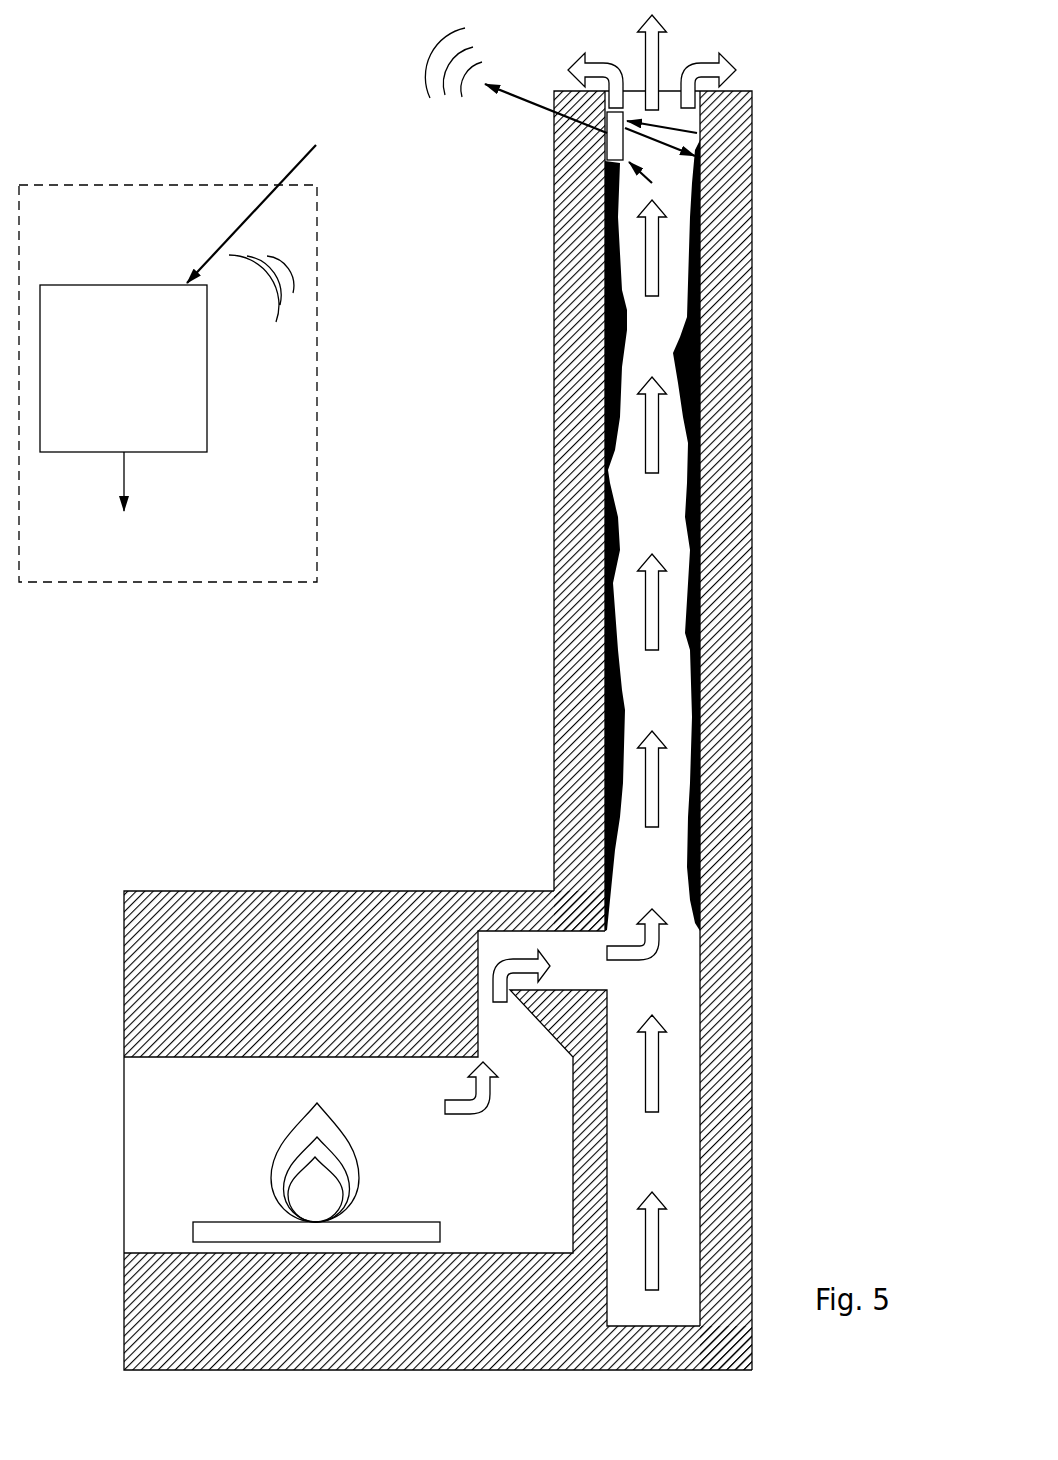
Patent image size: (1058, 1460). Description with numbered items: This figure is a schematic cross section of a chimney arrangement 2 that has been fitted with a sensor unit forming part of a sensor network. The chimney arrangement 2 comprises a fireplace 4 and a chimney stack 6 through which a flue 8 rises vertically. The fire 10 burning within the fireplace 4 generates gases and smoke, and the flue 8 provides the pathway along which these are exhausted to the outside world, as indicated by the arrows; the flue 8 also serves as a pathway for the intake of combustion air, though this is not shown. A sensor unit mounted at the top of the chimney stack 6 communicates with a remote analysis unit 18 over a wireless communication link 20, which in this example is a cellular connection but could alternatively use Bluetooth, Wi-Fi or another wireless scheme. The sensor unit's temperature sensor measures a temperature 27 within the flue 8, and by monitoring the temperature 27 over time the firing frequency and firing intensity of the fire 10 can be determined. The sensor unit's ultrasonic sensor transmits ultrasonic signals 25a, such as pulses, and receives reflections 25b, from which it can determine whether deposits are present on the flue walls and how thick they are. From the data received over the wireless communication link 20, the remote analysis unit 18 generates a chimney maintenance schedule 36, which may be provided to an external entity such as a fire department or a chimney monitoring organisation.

The chimney arrangement 2 is at (480, 692).
The fireplace 4 is at (155, 1133).
The chimney stack 6 is at (803, 365).
The flue 8 is at (657, 517).
The fire 10 is at (235, 1193).
The remote analysis unit 18 is at (106, 386).
The wireless communication link 20 is at (520, 105).
The ultrasonic signals 25a is at (658, 145).
The reflections 25b is at (700, 135).
The temperature 27 is at (633, 176).
The chimney maintenance schedule 36 is at (124, 504).